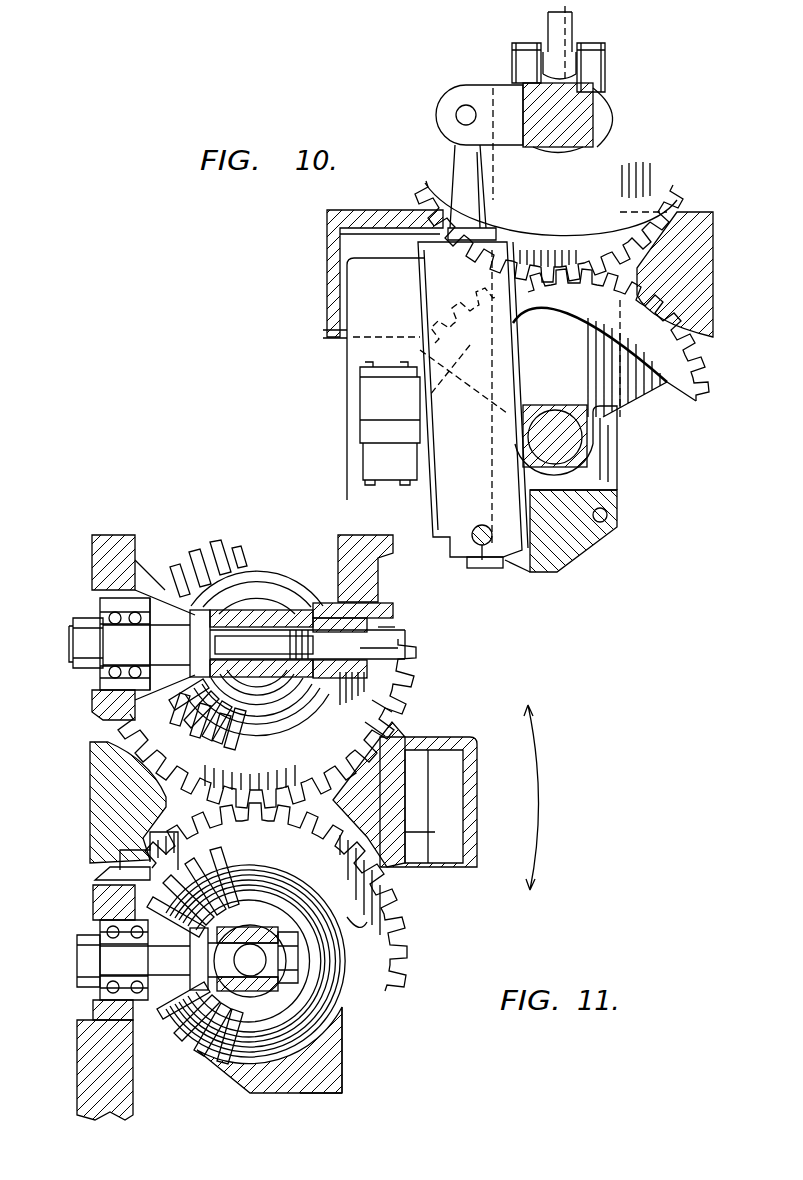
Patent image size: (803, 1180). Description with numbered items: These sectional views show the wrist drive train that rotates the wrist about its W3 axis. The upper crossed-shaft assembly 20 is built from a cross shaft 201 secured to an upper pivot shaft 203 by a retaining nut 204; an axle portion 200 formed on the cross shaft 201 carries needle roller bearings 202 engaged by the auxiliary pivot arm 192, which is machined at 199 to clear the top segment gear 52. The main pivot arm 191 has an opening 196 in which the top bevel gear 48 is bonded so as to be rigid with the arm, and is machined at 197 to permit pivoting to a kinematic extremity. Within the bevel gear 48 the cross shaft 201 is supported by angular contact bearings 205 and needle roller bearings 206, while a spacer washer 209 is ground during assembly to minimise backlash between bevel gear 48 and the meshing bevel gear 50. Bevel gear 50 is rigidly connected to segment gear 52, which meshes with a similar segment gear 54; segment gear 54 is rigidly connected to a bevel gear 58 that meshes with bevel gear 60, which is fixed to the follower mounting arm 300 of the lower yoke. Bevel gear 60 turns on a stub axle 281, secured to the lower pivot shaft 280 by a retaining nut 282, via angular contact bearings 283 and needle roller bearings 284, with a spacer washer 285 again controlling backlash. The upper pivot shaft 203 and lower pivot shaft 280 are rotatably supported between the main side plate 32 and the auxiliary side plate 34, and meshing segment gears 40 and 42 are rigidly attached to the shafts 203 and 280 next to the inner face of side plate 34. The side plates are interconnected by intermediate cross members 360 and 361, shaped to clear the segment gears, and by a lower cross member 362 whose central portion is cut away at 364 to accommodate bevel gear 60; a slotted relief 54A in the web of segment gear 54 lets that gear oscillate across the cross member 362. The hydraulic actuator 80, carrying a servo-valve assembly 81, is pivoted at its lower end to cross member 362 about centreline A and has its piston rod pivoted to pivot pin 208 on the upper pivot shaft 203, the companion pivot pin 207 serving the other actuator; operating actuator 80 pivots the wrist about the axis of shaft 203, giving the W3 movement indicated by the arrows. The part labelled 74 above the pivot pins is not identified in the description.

In FIG. 10, the shaft 74 is at (556, 25).
In FIG. 10, the hydraulic actuator pivot pin 207 is at (512, 60).
In FIG. 10, the upper pivot shaft 203 is at (572, 120).
In FIG. 11, the upper pivot shaft 203 is at (243, 615).
In FIG. 10, the hydraulic actuator pivot pin 208 is at (456, 116).
In FIG. 10, the segment gear 40 is at (605, 256).
In FIG. 10, the intermediate cross member 361 is at (331, 260).
In FIG. 11, the intermediate cross member 361 is at (436, 834).
In FIG. 10, the hydraulic actuator 80 is at (455, 287).
In FIG. 10, the servo-valve assembly 81 is at (385, 392).
In FIG. 10, the segment gear 42 is at (596, 286).
In FIG. 10, the lower pivot shaft 280 is at (561, 440).
In FIG. 11, the lower pivot shaft 280 is at (252, 991).
In FIG. 10, the auxiliary side plate 34 is at (608, 468).
In FIG. 10, the lower cross member 362 is at (578, 519).
In FIG. 11, the lower cross member 362 is at (326, 1081).
In FIG. 10, the centreline A is at (487, 549).
In FIG. 10, the intermediate cross member 360 is at (713, 340).
In FIG. 11, the intermediate cross member 360 is at (110, 783).
In FIG. 11, the main pivot arm 191 is at (110, 534).
In FIG. 11, the bearing opening 196 is at (108, 568).
In FIG. 11, the bevel gear 48 is at (150, 580).
In FIG. 11, the machined portion 197 is at (100, 706).
In FIG. 11, the angular contact bearings 205 is at (112, 617).
In FIG. 11, the needle roller bearings 206 is at (88, 640).
In FIG. 11, the spacer washer 209 is at (227, 612).
In FIG. 11, the cross shaft 201 is at (276, 635).
In FIG. 11, the retaining nut 204 is at (309, 612).
In FIG. 11, the bevel gear 50 is at (190, 704).
In FIG. 11, the auxiliary pivot arm 192 is at (362, 573).
In FIG. 11, the needle roller bearings 202 is at (372, 609).
In FIG. 11, the machined portion 199 is at (386, 631).
In FIG. 11, the axle portion 200 is at (397, 649).
In FIG. 11, the crossed-shaft assembly 20 is at (386, 708).
In FIG. 11, the main side plate 32 is at (385, 730).
In FIG. 11, the segment gear 52 is at (267, 723).
In FIG. 11, the segment gear 54 is at (276, 897).
In FIG. 11, the bevel gear 58 is at (150, 853).
In FIG. 11, the bevel gear 60 is at (118, 873).
In FIG. 11, the angular contact bearings 283 is at (112, 935).
In FIG. 11, the needle roller bearings 284 is at (177, 946).
In FIG. 11, the follower mounting arm 300 is at (97, 1041).
In FIG. 11, the stub axle 281 is at (250, 958).
In FIG. 11, the retaining nut 282 is at (285, 976).
In FIG. 11, the spacer washer 285 is at (200, 1053).
In FIG. 11, the cut-away portion 364 is at (262, 1063).
In FIG. 11, the W3 axis W3 is at (553, 797).
In FIG. 11, the slotted relief 54A is at (405, 940).